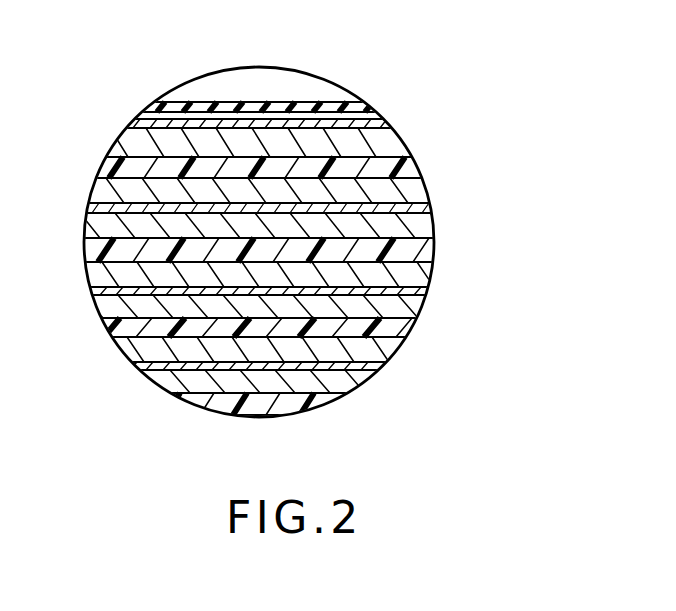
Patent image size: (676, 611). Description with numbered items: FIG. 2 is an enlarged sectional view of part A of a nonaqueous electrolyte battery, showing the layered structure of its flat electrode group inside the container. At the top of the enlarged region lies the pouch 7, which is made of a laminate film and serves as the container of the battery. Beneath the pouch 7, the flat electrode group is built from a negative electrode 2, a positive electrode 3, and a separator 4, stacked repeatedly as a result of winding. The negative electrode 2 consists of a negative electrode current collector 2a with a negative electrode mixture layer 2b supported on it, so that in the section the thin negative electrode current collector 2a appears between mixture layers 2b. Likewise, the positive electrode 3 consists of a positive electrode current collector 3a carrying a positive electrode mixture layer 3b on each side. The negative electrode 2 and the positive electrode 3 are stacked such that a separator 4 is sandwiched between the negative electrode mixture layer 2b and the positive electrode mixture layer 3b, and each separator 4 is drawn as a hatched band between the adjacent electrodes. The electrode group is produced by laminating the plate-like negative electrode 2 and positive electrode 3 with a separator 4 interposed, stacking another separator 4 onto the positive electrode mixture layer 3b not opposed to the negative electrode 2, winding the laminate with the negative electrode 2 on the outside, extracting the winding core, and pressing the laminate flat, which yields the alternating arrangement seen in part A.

The part A is at (177, 94).
The pouch 7 is at (366, 107).
The negative electrode 2 is at (296, 222).
The negative electrode current collector 2a is at (390, 123).
The negative electrode mixture layer 2b is at (393, 144).
The positive electrode 3 is at (297, 304).
The positive electrode current collector 3a is at (400, 214).
The positive electrode mixture layer 3b is at (404, 187).
The separator 4 is at (113, 166).